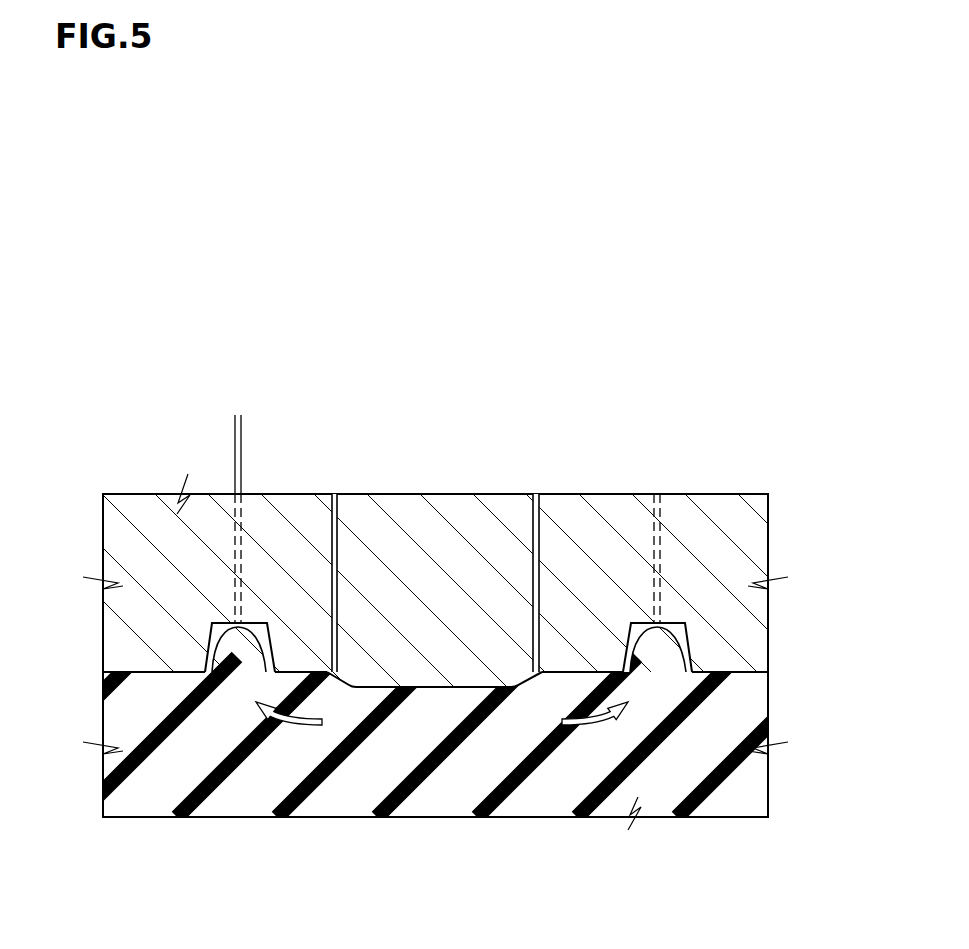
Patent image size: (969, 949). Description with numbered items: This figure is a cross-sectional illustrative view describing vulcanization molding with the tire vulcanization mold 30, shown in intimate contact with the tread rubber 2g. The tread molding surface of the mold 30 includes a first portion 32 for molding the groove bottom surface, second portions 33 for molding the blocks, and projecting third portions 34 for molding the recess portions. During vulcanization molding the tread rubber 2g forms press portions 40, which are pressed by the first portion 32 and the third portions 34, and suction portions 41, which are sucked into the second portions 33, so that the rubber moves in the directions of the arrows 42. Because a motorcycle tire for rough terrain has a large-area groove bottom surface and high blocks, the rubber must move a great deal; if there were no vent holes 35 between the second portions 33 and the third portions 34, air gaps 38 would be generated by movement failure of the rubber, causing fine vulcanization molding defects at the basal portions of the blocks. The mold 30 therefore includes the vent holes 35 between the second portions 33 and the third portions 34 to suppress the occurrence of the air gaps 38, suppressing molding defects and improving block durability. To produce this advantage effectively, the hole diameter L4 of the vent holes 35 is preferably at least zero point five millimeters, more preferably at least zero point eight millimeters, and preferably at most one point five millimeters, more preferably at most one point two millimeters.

The tire vulcanization mold 30 is at (732, 530).
The tread rubber 2g is at (737, 702).
The first portion 32 is at (300, 673).
The second portions 33 is at (210, 623).
The projecting third portions 34 is at (457, 688).
The vent holes 35 is at (243, 560).
The air gaps 38 is at (355, 672).
The press portions 40 is at (418, 697).
The suction portions 41 is at (237, 658).
The arrows 42 is at (291, 726).
The hole diameter L4 is at (275, 422).